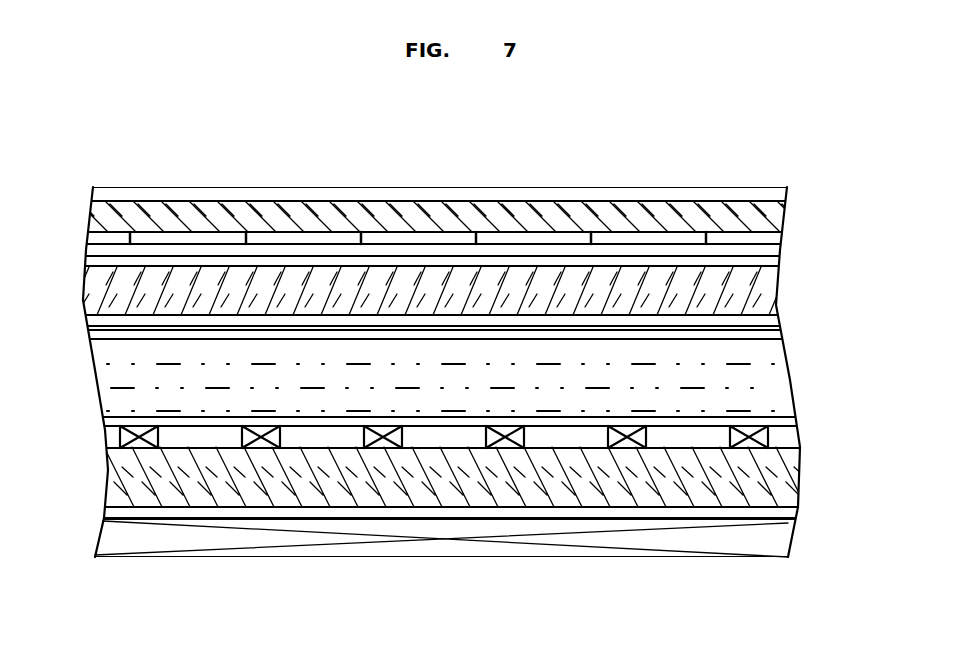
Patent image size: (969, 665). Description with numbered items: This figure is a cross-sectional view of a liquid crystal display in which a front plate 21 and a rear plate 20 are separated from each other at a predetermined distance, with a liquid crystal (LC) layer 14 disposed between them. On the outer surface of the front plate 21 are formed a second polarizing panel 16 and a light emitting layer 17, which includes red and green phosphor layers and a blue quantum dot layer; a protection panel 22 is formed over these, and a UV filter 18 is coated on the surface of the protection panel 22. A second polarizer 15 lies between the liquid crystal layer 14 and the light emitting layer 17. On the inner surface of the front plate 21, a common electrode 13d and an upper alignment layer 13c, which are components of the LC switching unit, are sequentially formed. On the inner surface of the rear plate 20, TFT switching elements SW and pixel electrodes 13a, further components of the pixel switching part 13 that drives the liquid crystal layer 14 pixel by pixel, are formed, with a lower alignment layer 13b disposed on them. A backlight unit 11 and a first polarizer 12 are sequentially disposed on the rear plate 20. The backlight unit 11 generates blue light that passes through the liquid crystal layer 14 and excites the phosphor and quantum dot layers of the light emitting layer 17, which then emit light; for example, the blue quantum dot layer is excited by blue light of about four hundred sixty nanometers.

The backlight unit 11 is at (780, 540).
The first polarizer 12 is at (787, 516).
The pixel switching part 13 is at (464, 514).
The pixel electrodes 13a is at (680, 440).
The lower alignment layer 13b is at (783, 424).
The upper alignment layer 13c is at (770, 334).
The common electrode 13d is at (767, 323).
The liquid crystal layer 14 is at (472, 390).
The second polarizer 15 is at (770, 268).
The second polarizing panel 16 is at (770, 258).
The light emitting layer 17 is at (782, 240).
The UV filter 18 is at (773, 193).
The rear plate 20 is at (790, 482).
The front plate 21 is at (760, 300).
The protection panel 22 is at (770, 220).
The TFT switching elements SW is at (118, 435).
The liquid crystal LC is at (414, 378).